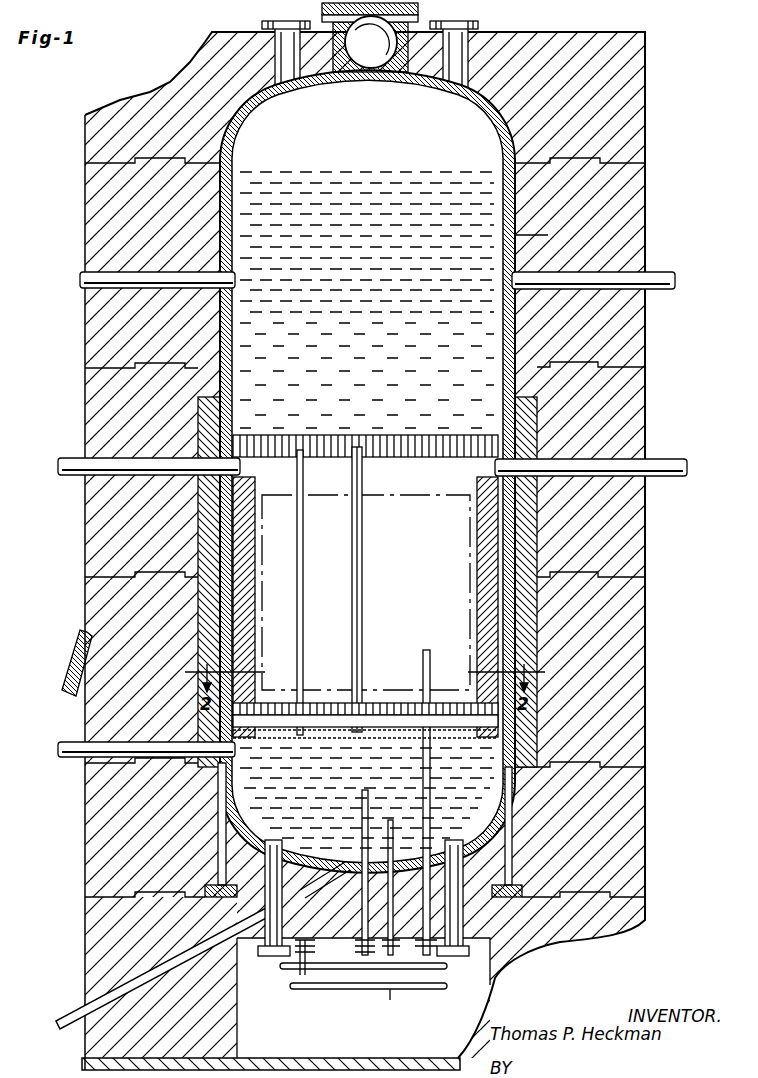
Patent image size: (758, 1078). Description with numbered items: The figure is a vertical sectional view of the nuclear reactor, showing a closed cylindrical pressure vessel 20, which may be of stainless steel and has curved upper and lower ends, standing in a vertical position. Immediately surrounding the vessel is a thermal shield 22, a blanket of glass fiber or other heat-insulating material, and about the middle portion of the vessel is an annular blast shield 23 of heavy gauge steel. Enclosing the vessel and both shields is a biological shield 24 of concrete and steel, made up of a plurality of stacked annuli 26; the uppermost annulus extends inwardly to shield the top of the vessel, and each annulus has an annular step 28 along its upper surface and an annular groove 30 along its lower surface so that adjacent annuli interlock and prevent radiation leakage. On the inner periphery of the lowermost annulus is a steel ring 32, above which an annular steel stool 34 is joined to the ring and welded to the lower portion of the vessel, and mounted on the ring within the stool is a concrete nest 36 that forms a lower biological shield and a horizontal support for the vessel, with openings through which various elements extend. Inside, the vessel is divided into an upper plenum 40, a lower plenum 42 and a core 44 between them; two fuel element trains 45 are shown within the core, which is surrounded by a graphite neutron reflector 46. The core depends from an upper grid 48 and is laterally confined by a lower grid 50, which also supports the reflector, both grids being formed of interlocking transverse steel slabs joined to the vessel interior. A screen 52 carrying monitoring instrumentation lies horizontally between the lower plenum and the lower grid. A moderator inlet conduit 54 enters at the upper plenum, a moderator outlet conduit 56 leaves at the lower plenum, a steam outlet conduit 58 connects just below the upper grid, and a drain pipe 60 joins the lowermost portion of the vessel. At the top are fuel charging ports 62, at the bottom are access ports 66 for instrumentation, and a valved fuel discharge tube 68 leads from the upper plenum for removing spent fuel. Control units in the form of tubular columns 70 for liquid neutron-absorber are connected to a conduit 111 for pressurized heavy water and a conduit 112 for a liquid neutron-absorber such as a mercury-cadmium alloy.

The pressure vessel 20 is at (500, 325).
The thermal shield 22 is at (518, 236).
The blast shield 23 is at (525, 521).
The biological shield 24 is at (652, 230).
The annulus 26 is at (632, 380).
The annular step 28 is at (592, 154).
The annular groove 30 is at (600, 158).
The steel ring 32 is at (518, 888).
The annular steel stool 34 is at (515, 834).
The concrete nest 36 is at (222, 862).
The upper plenum 40 is at (367, 300).
The lower plenum 42 is at (329, 814).
The core 44 is at (366, 592).
The fuel element train 45 is at (363, 621).
The neutron reflector 46 is at (255, 600).
The upper grid 48 is at (444, 456).
The lower grid 50 is at (380, 703).
The screen 52 is at (436, 746).
The moderator inlet conduit 54 is at (82, 278).
The moderator outlet conduit 56 is at (70, 742).
The steam outlet conduit 58 is at (70, 459).
The drain pipe 60 is at (60, 1022).
The fuel charging port 62 is at (285, 30).
The access port 66 is at (260, 906).
The valved fuel discharge tube 68 is at (66, 683).
The tubular column 70 is at (322, 620).
The conduit 111 is at (290, 968).
The conduit 112 is at (346, 989).